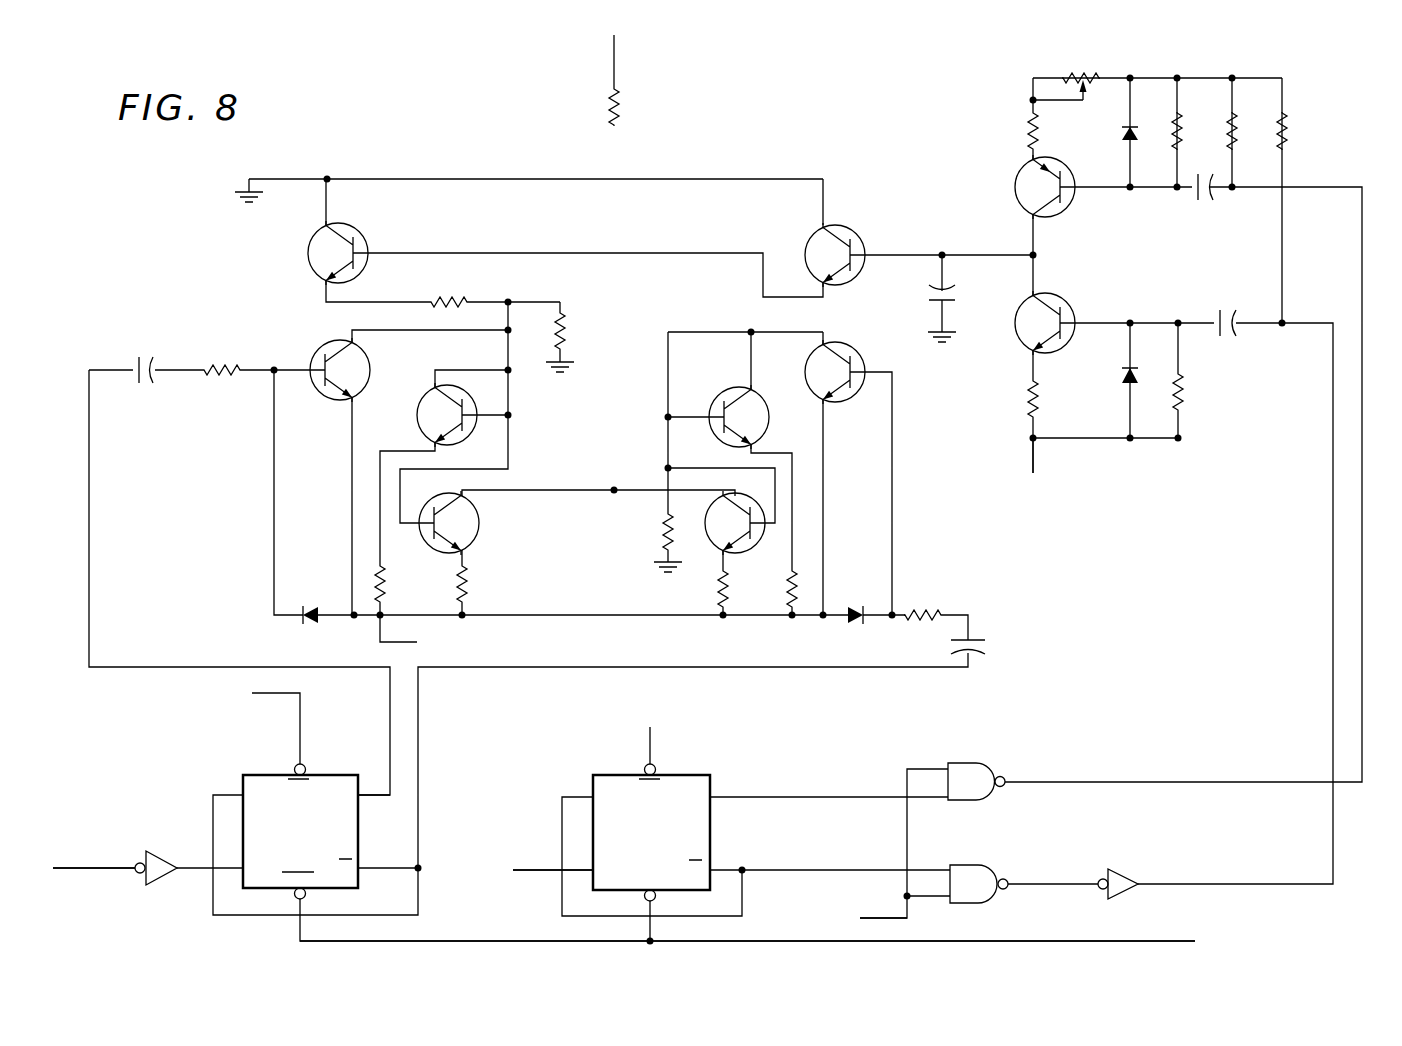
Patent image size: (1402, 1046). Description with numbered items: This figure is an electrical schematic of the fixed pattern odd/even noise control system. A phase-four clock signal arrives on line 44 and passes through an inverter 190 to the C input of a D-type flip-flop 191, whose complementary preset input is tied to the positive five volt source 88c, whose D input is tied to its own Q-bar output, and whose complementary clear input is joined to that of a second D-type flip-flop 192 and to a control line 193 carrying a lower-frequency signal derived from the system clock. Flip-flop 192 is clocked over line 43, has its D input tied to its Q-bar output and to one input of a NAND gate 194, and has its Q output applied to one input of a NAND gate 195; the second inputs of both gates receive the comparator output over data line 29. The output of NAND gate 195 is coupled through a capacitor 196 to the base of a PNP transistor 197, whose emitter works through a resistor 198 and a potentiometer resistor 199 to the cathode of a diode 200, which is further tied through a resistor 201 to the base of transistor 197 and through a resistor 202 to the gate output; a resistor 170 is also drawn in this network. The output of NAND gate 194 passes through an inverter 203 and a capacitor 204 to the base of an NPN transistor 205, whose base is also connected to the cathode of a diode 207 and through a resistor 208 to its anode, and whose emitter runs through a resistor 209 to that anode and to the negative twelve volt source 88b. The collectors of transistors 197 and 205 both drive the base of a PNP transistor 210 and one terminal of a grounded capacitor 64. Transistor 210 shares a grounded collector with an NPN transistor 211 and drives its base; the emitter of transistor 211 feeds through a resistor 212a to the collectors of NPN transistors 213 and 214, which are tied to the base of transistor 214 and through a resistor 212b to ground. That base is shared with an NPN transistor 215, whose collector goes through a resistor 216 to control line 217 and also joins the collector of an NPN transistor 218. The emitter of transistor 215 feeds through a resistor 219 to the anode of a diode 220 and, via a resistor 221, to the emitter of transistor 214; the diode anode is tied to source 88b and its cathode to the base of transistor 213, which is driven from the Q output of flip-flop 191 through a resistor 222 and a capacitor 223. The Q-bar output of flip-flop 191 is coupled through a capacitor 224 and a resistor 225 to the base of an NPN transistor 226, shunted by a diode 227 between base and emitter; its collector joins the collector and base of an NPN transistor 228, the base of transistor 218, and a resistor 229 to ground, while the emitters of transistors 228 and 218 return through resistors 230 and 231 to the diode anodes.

The control line 217 is at (616, 58).
The 470 ohm resistor 216 is at (620, 101).
The NPN transistor 211 is at (309, 257).
The 2.7 K-ohm resistor 212a is at (452, 296).
The 1.4 K-ohm resistor 212b is at (563, 328).
The 200 picofarad capacitor 223 is at (146, 356).
The 330 ohm resistor 222 is at (234, 342).
The NPN transistor 213 is at (318, 354).
The NPN transistor 214 is at (418, 420).
The NPN transistor 215 is at (470, 526).
The diode 220 is at (314, 608).
The 100 ohm resistor 221 is at (386, 590).
The 100 ohm resistor 219 is at (470, 592).
The +5 volt source 88c is at (440, 670).
The 1.10 K-ohm resistor 229 is at (662, 536).
The NPN transistor 228 is at (720, 400).
The NPN transistor 226 is at (814, 373).
The NPN transistor 218 is at (766, 490).
The 100 ohm resistor 231 is at (718, 584).
The 100 ohm resistor 230 is at (788, 582).
The diode 227 is at (856, 606).
The 330 ohm resistor 225 is at (934, 610).
The 200 picofarad capacitor 224 is at (980, 640).
The capacitor 64 is at (915, 293).
The PNP transistor 210 is at (814, 244).
The NPN transistor 205 is at (1064, 306).
The diode 207 is at (1124, 380).
The 1.30 K-ohm resistor 209 is at (1040, 404).
The -12 volt source 88b is at (1038, 468).
The 10 K-ohm resistor 208 is at (1184, 386).
The 0.01 microfarad capacitor 204 is at (1216, 318).
The 500 ohm resistor 199 is at (1084, 72).
The 1.2 K-ohm resistor 198 is at (1028, 130).
The PNP transistor 197 is at (1022, 190).
The diode 200 is at (1124, 132).
The 10 K-ohm resistor 201 is at (1182, 128).
The 1.0 K-ohm resistor 202 is at (1238, 128).
The resistor 170 is at (1288, 128).
The 0.01 microfarad capacitor 196 is at (1196, 198).
The line 44 is at (86, 864).
The inverter 190 is at (160, 862).
The D-type flip-flop 191 is at (318, 843).
The line 43 is at (526, 868).
The D-type flip-flop 192 is at (670, 843).
The data line 29 is at (874, 916).
The NAND gate 195 is at (976, 778).
The NAND gate 194 is at (976, 880).
The inverter 203 is at (1130, 882).
The control line 193 is at (1128, 930).